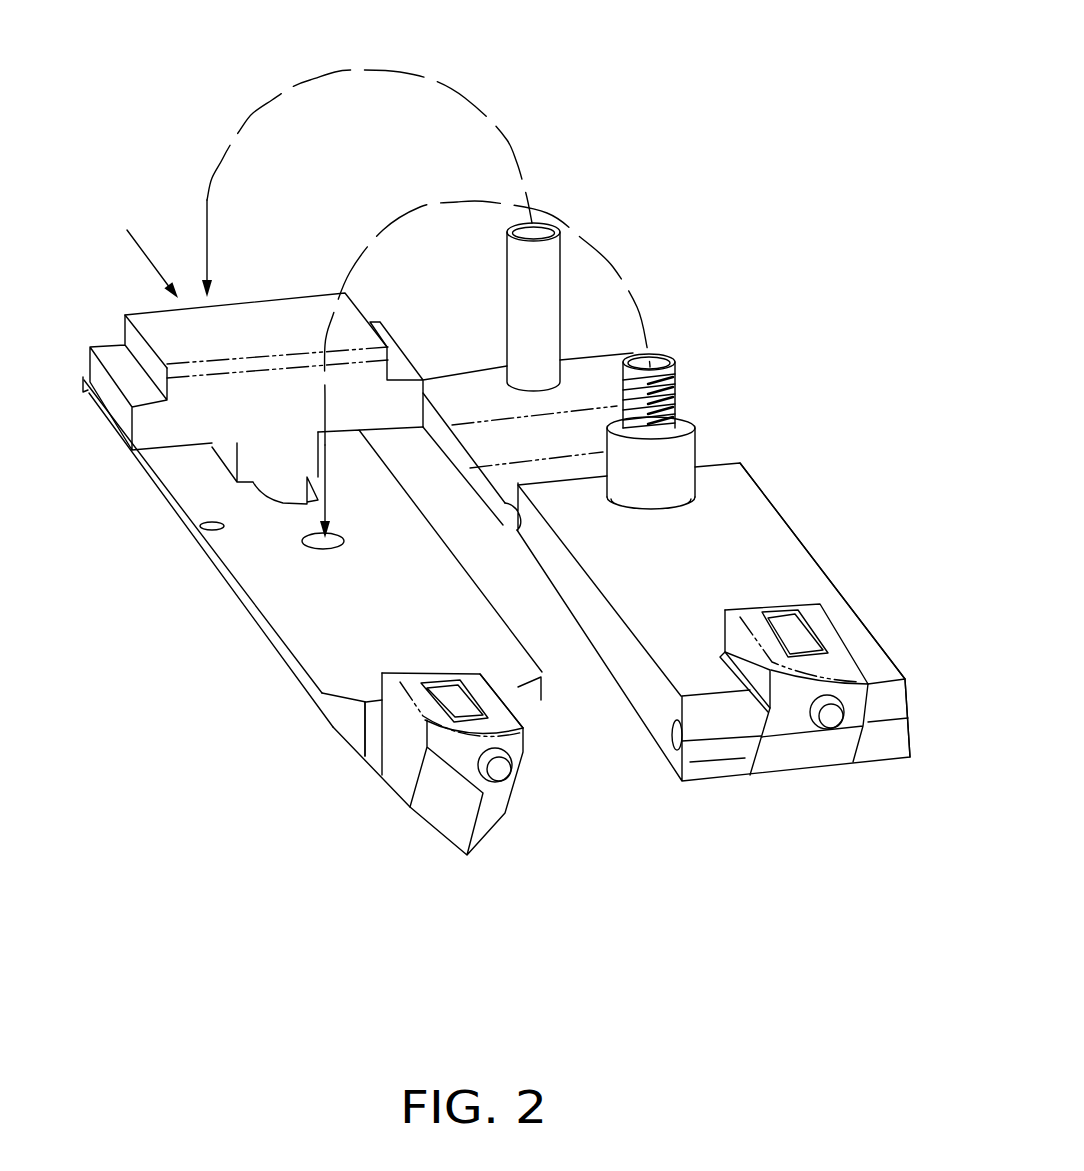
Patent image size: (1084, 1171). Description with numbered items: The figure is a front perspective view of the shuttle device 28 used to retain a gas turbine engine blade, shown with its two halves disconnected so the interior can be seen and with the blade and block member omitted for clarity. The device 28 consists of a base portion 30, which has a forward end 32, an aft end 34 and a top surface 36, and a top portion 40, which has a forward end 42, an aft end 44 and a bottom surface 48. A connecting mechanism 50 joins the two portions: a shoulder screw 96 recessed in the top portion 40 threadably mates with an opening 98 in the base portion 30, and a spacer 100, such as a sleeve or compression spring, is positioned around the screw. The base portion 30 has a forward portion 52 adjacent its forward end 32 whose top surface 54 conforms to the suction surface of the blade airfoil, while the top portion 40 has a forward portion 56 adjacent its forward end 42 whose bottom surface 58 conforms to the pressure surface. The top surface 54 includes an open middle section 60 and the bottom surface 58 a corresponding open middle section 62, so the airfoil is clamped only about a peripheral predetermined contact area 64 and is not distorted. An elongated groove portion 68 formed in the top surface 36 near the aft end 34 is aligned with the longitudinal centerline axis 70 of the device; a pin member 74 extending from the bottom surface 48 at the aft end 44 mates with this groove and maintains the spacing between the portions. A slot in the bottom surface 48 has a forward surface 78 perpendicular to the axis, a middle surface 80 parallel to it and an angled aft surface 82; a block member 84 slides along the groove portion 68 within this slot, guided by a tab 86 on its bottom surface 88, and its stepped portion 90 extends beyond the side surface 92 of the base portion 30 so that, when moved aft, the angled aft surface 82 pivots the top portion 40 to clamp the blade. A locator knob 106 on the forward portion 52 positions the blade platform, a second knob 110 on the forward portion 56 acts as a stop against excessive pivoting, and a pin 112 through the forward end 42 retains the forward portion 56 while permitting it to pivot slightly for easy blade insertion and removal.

The device 28 is at (775, 312).
The base portion 30 is at (318, 728).
The forward end 32 is at (377, 750).
The aft end 34 is at (83, 377).
The top surface 36 is at (160, 470).
The top portion 40 is at (777, 489).
The forward end 42 is at (880, 737).
The aft end 44 is at (465, 362).
The bottom surface 48 is at (802, 575).
The mechanism 50 is at (710, 428).
The forward portion 52 is at (425, 802).
The top surface 54 is at (413, 673).
The forward portion 56 is at (788, 765).
The bottom surface 58 is at (823, 627).
The open middle section 60 is at (447, 688).
The open middle section 62 is at (780, 623).
The predetermined contact area 64 is at (475, 690).
The elongated groove portion 68 is at (278, 493).
The longitudinal centerline axis 70 is at (143, 258).
The pin member 74 is at (548, 295).
The forward surface 78 is at (506, 532).
The middle surface 80 is at (490, 482).
The aft surface 82 is at (472, 443).
The block member 84 is at (258, 305).
The tab 86 is at (257, 483).
The bottom surface 88 is at (343, 435).
The stepped portion 90 is at (150, 385).
The side surface 92 is at (233, 592).
The shoulder screw 96 is at (680, 387).
The opening 98 is at (343, 540).
The spacer 100 is at (627, 482).
The locator knob 106 is at (505, 773).
The second knob 110 is at (827, 729).
The pin 112 is at (670, 750).